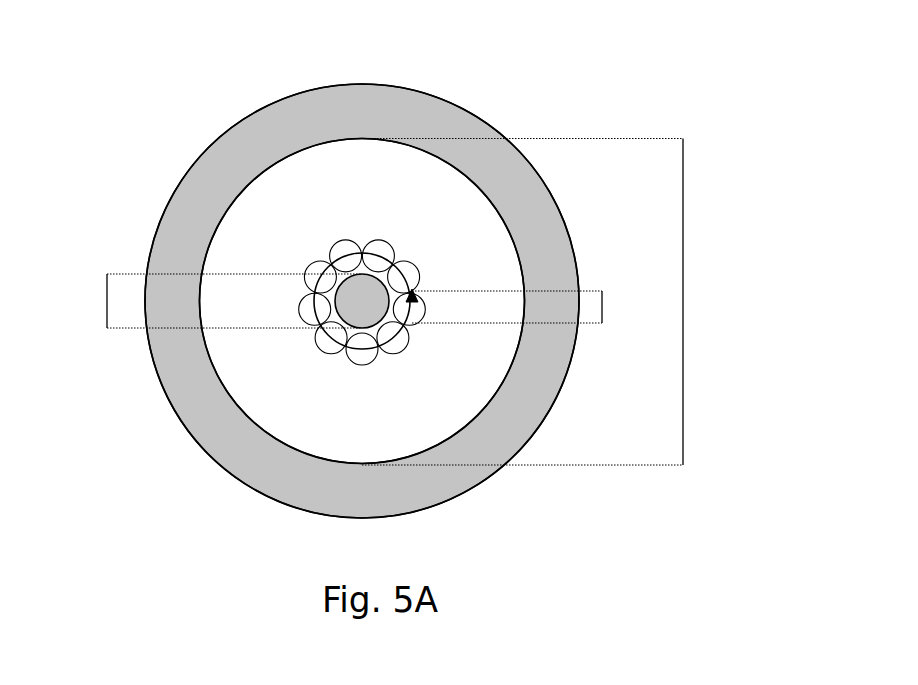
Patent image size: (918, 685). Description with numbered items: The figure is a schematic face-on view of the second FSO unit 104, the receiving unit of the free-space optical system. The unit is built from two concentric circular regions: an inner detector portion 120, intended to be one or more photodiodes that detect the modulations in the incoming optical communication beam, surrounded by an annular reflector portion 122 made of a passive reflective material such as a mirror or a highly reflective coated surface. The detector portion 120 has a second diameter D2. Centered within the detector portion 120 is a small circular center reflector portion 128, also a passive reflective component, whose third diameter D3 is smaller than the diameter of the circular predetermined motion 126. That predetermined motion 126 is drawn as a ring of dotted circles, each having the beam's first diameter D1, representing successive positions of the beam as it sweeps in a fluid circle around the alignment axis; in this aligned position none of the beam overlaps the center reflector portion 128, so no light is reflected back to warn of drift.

The second FSO unit 104 is at (477, 82).
The detector portion 120 is at (318, 206).
The reflector portion 122 is at (304, 140).
The predetermined motion 126 is at (397, 253).
The center reflector portion 128 is at (381, 314).
The first diameter D1 is at (602, 305).
The second diameter D2 is at (683, 243).
The third diameter D3 is at (107, 296).